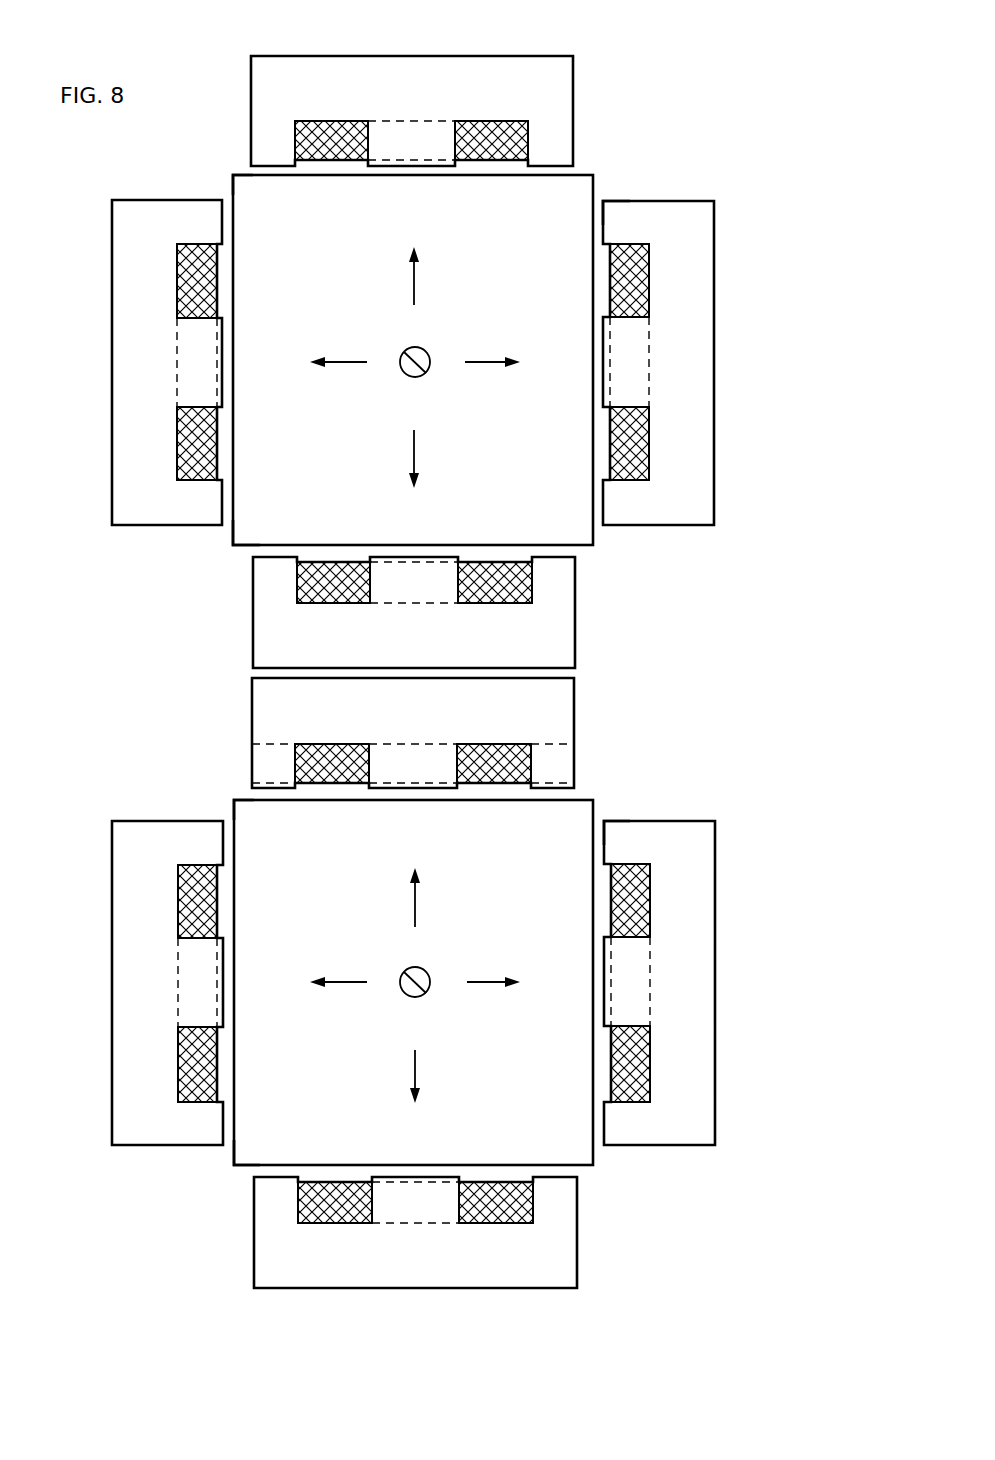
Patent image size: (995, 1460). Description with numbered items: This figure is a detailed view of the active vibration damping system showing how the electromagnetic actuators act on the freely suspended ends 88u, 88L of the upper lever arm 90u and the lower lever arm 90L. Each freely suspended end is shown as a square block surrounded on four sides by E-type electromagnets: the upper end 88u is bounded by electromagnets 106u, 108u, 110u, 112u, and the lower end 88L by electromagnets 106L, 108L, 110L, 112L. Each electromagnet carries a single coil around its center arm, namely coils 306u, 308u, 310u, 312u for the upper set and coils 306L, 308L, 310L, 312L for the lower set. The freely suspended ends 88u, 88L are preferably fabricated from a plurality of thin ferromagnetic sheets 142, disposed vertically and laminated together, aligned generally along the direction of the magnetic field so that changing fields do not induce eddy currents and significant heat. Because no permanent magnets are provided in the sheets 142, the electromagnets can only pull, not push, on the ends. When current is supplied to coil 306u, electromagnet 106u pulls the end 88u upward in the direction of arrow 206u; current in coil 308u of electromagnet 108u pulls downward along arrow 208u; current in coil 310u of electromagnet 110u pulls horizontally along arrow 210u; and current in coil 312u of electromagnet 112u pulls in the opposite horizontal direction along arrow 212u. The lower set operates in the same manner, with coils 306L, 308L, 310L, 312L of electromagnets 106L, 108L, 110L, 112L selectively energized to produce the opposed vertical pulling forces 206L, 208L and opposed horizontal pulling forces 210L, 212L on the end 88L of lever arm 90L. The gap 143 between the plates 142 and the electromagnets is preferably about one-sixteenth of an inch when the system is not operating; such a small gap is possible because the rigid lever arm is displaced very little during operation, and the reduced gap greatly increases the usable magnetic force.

The freely suspended end 88u is at (582, 192).
The upper lever arm 90u is at (408, 368).
The electromagnet 106u is at (560, 73).
The electromagnet 108u is at (562, 632).
The electromagnet 110u is at (692, 315).
The electromagnet 112u is at (132, 294).
The coil 306u is at (472, 128).
The coil 308u is at (513, 583).
The coil 310u is at (648, 265).
The coil 312u is at (177, 423).
The arrow 206u is at (414, 285).
The arrow 208u is at (415, 450).
The arrow 210u is at (482, 361).
The arrow 212u is at (340, 361).
The gap 143 is at (603, 197).
The thin ferromagnetic sheets 142 is at (243, 533).
The freely suspended end 88L is at (580, 810).
The lower lever arm 90L is at (408, 975).
The electromagnet 106L is at (565, 713).
The electromagnet 108L is at (562, 1258).
The electromagnet 110L is at (700, 963).
The electromagnet 112L is at (138, 963).
The coil 306L is at (478, 747).
The coil 308L is at (352, 1225).
The coil 310L is at (635, 890).
The coil 312L is at (178, 905).
The vertical pulling force 206L is at (415, 902).
The vertical pulling force 208L is at (415, 1070).
The horizontal pulling force 210L is at (487, 980).
The horizontal pulling force 212L is at (343, 980).